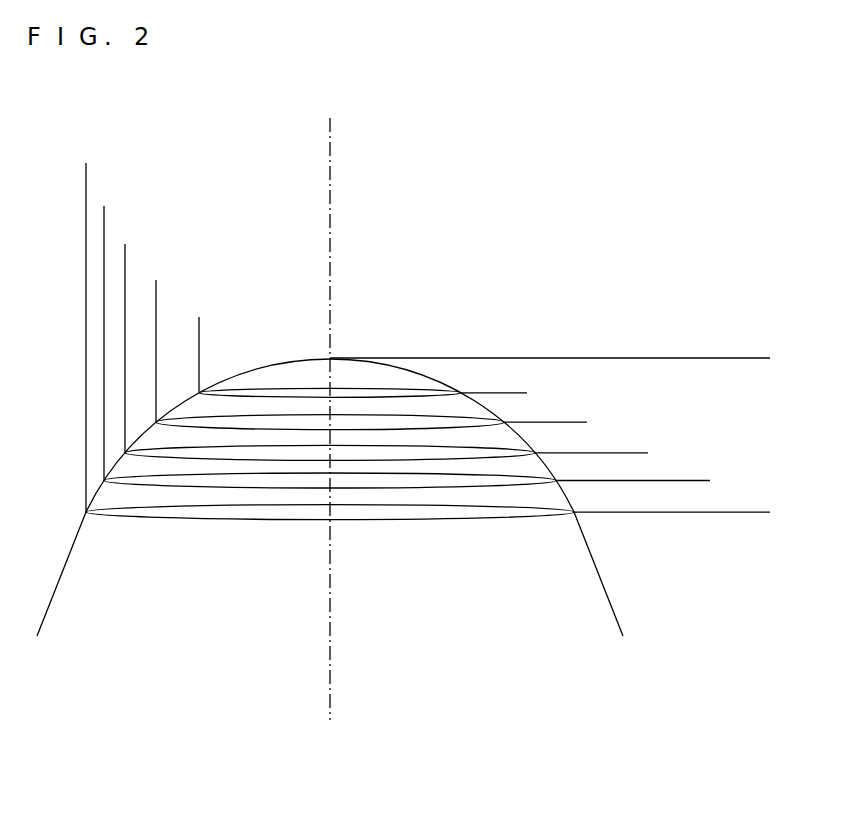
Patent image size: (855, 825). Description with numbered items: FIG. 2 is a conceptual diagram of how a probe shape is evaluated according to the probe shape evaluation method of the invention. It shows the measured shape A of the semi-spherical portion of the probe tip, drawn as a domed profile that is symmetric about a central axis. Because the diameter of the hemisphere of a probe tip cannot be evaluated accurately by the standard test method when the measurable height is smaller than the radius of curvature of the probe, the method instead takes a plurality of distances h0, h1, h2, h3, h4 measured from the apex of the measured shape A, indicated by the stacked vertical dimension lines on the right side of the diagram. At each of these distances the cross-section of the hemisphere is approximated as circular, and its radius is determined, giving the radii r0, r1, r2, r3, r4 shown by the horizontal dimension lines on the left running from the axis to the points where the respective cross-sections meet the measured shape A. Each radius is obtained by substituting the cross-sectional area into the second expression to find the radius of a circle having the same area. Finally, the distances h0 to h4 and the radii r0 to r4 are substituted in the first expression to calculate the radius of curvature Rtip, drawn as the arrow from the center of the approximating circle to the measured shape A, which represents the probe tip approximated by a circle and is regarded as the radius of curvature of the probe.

The radius of cross-section r0 is at (330, 331).
The radius of cross-section r1 is at (330, 293).
The radius of cross-section r2 is at (330, 255).
The radius of cross-section r3 is at (330, 218).
The radius of cross-section r4 is at (330, 181).
The distance from apex h0 is at (513, 358).
The distance from apex h1 is at (575, 358).
The distance from apex h2 is at (636, 358).
The distance from apex h3 is at (697, 358).
The distance from apex h4 is at (759, 358).
The radius of curvature of the probe Rtip is at (462, 393).
The measured shape of the semi-spherical portion of the probe tip A is at (68, 570).